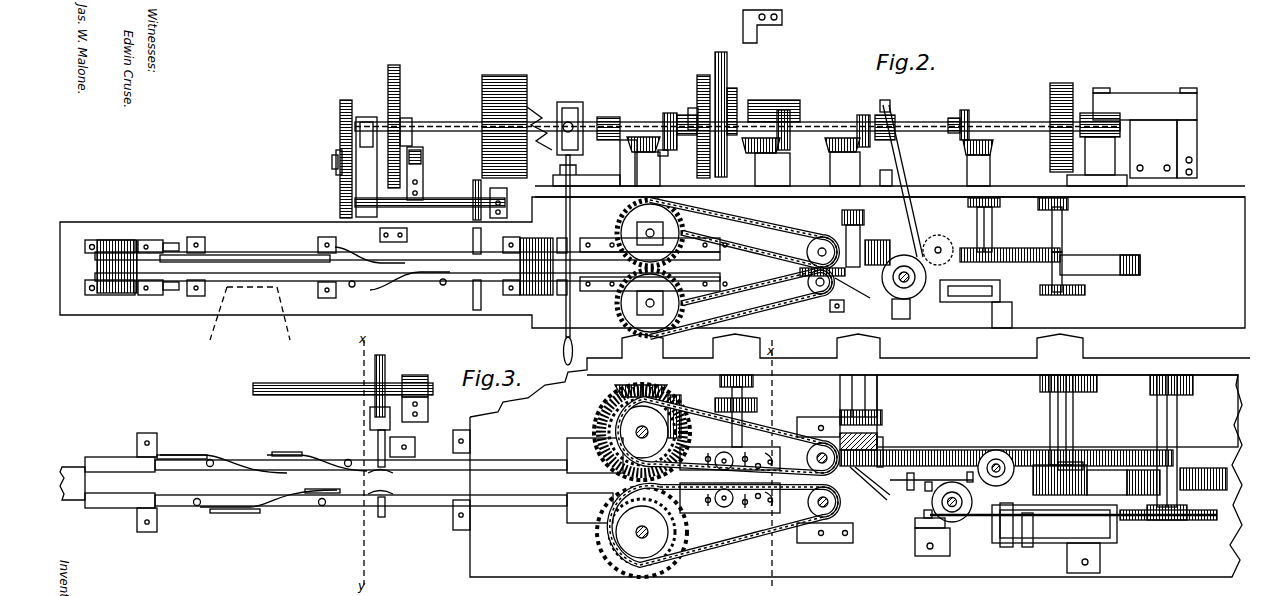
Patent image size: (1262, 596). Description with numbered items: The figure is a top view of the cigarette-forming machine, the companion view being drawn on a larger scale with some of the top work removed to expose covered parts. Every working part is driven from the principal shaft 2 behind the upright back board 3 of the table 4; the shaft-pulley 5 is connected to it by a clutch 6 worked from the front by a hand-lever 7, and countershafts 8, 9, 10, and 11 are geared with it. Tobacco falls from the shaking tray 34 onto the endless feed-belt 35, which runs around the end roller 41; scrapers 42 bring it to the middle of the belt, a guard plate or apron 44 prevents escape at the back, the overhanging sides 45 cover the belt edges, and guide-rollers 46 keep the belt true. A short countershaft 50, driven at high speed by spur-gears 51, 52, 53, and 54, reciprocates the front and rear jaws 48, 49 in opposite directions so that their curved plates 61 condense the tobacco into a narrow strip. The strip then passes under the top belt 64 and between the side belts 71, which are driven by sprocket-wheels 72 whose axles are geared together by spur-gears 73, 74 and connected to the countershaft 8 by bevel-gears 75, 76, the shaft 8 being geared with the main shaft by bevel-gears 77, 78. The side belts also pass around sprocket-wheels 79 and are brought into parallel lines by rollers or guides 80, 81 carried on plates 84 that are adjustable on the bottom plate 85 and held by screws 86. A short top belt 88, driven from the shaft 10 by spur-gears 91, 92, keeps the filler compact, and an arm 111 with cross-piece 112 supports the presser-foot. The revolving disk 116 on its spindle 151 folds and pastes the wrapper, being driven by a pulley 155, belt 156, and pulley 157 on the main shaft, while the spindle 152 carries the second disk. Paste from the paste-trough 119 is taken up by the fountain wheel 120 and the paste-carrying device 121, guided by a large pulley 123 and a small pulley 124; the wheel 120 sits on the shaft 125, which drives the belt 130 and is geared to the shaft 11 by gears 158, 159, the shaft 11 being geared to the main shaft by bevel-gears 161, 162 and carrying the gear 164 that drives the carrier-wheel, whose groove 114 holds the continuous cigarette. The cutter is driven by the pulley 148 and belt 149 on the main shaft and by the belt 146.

In FIG. 2, the principal shaft 2 is at (737, 123).
In FIG. 2, the upright back board 3 is at (1010, 187).
In FIG. 2, the table 4 is at (652, 257).
In FIG. 2, the shaft-pulley 5 is at (520, 76).
In FIG. 2, the clutch 6 is at (569, 102).
In FIG. 2, the hand-lever 7 is at (563, 345).
In FIG. 2, the countershaft 8 is at (647, 136).
In FIG. 2, the countershaft 9 is at (762, 137).
In FIG. 2, the countershaft 10 is at (842, 137).
In FIG. 3, the countershaft 10 is at (870, 397).
In FIG. 2, the countershaft 11 is at (984, 138).
In FIG. 3, the countershaft 11 is at (1052, 420).
In FIG. 2, the shaking tray 34 is at (250, 313).
In FIG. 2, the feed-belt 35 is at (97, 265).
In FIG. 3, the feed-belt 35 is at (121, 482).
In FIG. 2, the end roller 41 is at (118, 288).
In FIG. 2, the scrapers 42 is at (392, 268).
In FIG. 3, the scrapers 42 is at (268, 470).
In FIG. 2, the guard plate or apron 44 is at (225, 255).
In FIG. 2, the overhanging sides 45 is at (411, 266).
In FIG. 3, the overhanging sides 45 is at (490, 460).
In FIG. 2, the guide-rollers 46 is at (352, 287).
In FIG. 3, the guide-rollers 46 is at (348, 459).
In FIG. 3, the front jaw 48 is at (386, 512).
In FIG. 3, the rear jaw 49 is at (399, 411).
In FIG. 2, the countershaft 50 is at (431, 211).
In FIG. 3, the countershaft 50 is at (290, 383).
In FIG. 2, the spur-gear 51 is at (401, 84).
In FIG. 2, the spur-gear 52 is at (417, 150).
In FIG. 2, the spur-gear 53 is at (340, 120).
In FIG. 2, the spur-gear 54 is at (338, 185).
In FIG. 2, the curved plates 61 is at (484, 269).
In FIG. 3, the curved plates 61 is at (380, 482).
In FIG. 2, the top belt 64 is at (650, 268).
In FIG. 2, the side belts 71 is at (743, 268).
In FIG. 3, the side belts 71 is at (760, 425).
In FIG. 3, the sprocket-wheels 72 is at (642, 482).
In FIG. 3, the spur-gear 73 is at (600, 548).
In FIG. 3, the spur-gear 74 is at (596, 420).
In FIG. 3, the bevel-gear 75 is at (668, 392).
In FIG. 3, the bevel-gear 76 is at (682, 405).
In FIG. 2, the bevel-gear 77 is at (668, 153).
In FIG. 2, the bevel-gear 78 is at (670, 112).
In FIG. 2, the sprocket-wheels 79 is at (818, 237).
In FIG. 3, the sprocket-wheels 79 is at (818, 416).
In FIG. 3, the rollers or guides 80 is at (722, 452).
In FIG. 3, the rollers or guides 81 is at (762, 480).
In FIG. 3, the plates 84 is at (698, 480).
In FIG. 3, the bottom plate 85 is at (739, 480).
In FIG. 3, the screws 86 is at (755, 480).
In FIG. 2, the top belt 88 is at (835, 284).
In FIG. 2, the spur-gear 91 is at (864, 218).
In FIG. 3, the spur-gear 92 is at (882, 417).
In FIG. 3, the arm 111 is at (884, 443).
In FIG. 3, the cross-piece 112 is at (897, 500).
In FIG. 3, the groove 114 is at (1228, 474).
In FIG. 3, the revolving disk 116 is at (961, 502).
In FIG. 3, the paste-trough 119 is at (1040, 530).
In FIG. 3, the fountain wheel 120 is at (1108, 535).
In FIG. 3, the paste-carrying device 121 is at (985, 530).
In FIG. 3, the large pulley 123 is at (1198, 520).
In FIG. 3, the small pulley 124 is at (924, 529).
In FIG. 2, the shaft 125 is at (1000, 230).
In FIG. 3, the shaft 125 is at (1057, 441).
In FIG. 2, the belt 130 is at (1040, 288).
In FIG. 3, the belt 130 is at (1096, 478).
In FIG. 2, the belt 146 is at (727, 70).
In FIG. 2, the pulley 148 is at (692, 108).
In FIG. 2, the belt 149 is at (703, 75).
In FIG. 2, the spindle 151 is at (907, 280).
In FIG. 3, the spindle 151 is at (955, 508).
In FIG. 2, the spindle 152 is at (938, 247).
In FIG. 3, the spindle 152 is at (996, 450).
In FIG. 2, the pulley 155 is at (904, 291).
In FIG. 2, the belt 156 is at (908, 168).
In FIG. 2, the pulley 157 is at (890, 103).
In FIG. 2, the gear 158 is at (1036, 206).
In FIG. 3, the gear 158 is at (1150, 385).
In FIG. 2, the gear 159 is at (968, 199).
In FIG. 3, the gear 159 is at (1048, 384).
In FIG. 2, the bevel-gear 161 is at (992, 146).
In FIG. 2, the bevel-gear 162 is at (964, 110).
In FIG. 3, the gear 164 is at (1036, 450).